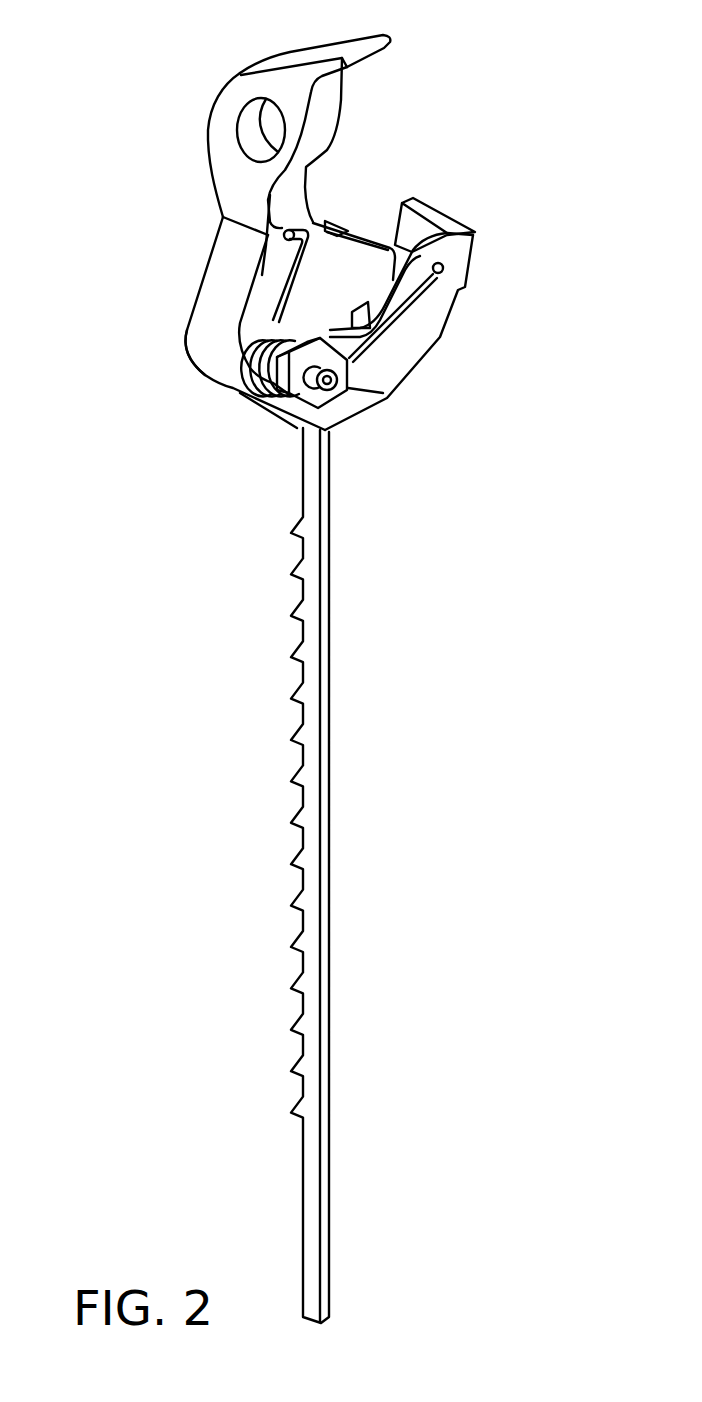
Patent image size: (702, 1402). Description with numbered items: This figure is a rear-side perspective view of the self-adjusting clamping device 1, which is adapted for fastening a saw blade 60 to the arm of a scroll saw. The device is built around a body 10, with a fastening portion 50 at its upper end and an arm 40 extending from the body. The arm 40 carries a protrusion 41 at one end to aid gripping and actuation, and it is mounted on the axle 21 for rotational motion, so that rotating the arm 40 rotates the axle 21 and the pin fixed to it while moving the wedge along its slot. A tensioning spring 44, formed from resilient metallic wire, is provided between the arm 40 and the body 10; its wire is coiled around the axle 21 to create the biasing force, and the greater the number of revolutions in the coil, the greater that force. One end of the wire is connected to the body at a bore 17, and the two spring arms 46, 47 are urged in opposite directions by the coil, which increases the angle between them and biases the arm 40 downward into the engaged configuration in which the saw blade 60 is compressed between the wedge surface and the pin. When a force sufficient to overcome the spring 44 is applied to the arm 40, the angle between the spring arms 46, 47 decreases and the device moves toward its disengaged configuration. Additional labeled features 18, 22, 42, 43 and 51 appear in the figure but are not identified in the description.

The self-adjusting clamping device 1 is at (598, 108).
The body 10 is at (176, 122).
The bore 17 is at (290, 216).
The spring hook end 18 is at (443, 267).
The axle 21 is at (328, 383).
The nut 22 is at (302, 392).
The arm 40 is at (392, 358).
The protrusion 41 is at (421, 228).
The frame corner 42 is at (218, 338).
The spring coil 43 is at (257, 362).
The tensioning spring 44 is at (282, 295).
The spring arm 46 is at (420, 317).
The spring arm 47 is at (283, 257).
The fastening portion 50 is at (282, 83).
The hole 51 is at (267, 117).
The saw blade 60 is at (308, 643).